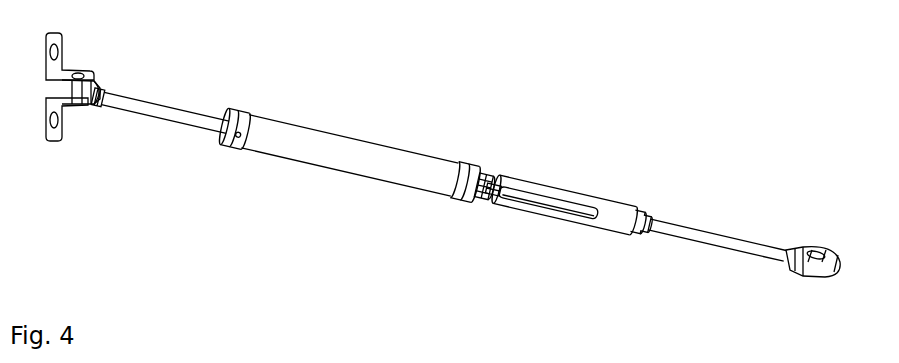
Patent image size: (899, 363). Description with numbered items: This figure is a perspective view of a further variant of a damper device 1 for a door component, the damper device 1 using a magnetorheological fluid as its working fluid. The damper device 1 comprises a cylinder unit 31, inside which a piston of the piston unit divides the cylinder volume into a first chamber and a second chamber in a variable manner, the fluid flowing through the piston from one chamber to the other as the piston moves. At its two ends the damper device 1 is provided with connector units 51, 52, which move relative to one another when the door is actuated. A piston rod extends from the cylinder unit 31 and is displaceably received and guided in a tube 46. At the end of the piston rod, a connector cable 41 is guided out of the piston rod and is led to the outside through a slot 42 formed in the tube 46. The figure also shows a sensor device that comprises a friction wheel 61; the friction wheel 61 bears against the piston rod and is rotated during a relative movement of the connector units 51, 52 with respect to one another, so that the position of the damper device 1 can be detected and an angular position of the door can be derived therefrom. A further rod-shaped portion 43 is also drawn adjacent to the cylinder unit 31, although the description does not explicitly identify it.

The damper device 1 is at (636, 100).
The cylinder unit 31 is at (357, 150).
The connector cable 41 is at (500, 203).
The slot 42 is at (569, 194).
The piston rod 43 is at (175, 113).
The tube 46 is at (623, 207).
The connector unit 51 is at (85, 73).
The connector unit 52 is at (792, 250).
The friction wheel 61 is at (480, 203).